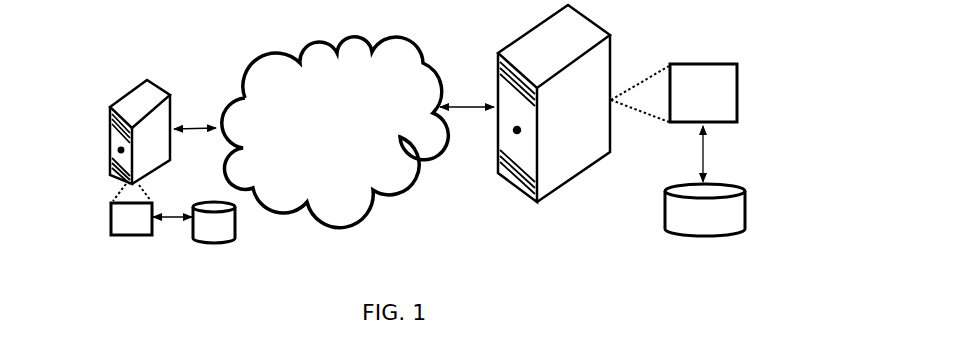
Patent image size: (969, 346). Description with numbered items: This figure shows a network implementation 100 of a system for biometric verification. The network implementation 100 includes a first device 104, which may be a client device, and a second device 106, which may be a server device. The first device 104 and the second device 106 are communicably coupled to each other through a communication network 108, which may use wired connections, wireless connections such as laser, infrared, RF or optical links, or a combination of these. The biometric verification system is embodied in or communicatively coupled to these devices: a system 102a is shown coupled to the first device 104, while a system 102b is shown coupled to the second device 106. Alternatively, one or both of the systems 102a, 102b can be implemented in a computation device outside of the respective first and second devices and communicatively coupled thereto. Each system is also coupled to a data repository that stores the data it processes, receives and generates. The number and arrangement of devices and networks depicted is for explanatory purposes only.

The network implementation 100 is at (424, 244).
The system 102a is at (130, 237).
The system 102b is at (703, 63).
The first device 104 is at (110, 134).
The second device 106 is at (600, 38).
The communication network 108 is at (343, 137).